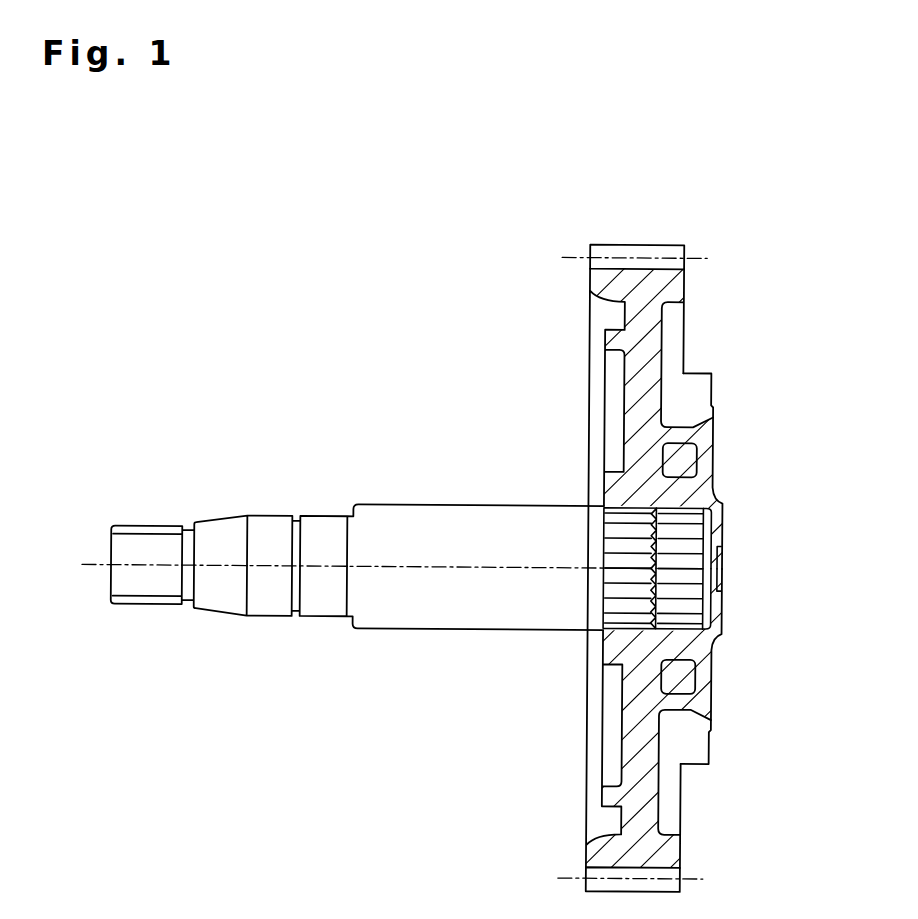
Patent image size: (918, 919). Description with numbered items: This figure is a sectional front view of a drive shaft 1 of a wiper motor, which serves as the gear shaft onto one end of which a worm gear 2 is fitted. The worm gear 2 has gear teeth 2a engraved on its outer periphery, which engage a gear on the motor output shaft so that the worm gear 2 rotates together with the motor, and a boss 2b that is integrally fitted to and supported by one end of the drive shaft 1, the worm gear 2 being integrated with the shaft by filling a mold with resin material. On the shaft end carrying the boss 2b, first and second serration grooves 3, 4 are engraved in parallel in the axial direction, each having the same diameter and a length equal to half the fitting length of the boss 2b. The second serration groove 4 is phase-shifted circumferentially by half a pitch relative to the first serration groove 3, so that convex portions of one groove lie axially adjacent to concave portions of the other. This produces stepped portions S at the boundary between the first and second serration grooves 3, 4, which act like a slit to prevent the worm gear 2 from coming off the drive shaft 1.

The drive shaft 1 is at (393, 474).
The worm gear 2 is at (681, 543).
The gear teeth 2a is at (633, 568).
The boss 2b is at (692, 568).
The first serration groove 3 is at (681, 568).
The second serration groove 4 is at (614, 502).
The stepped portions S is at (712, 568).